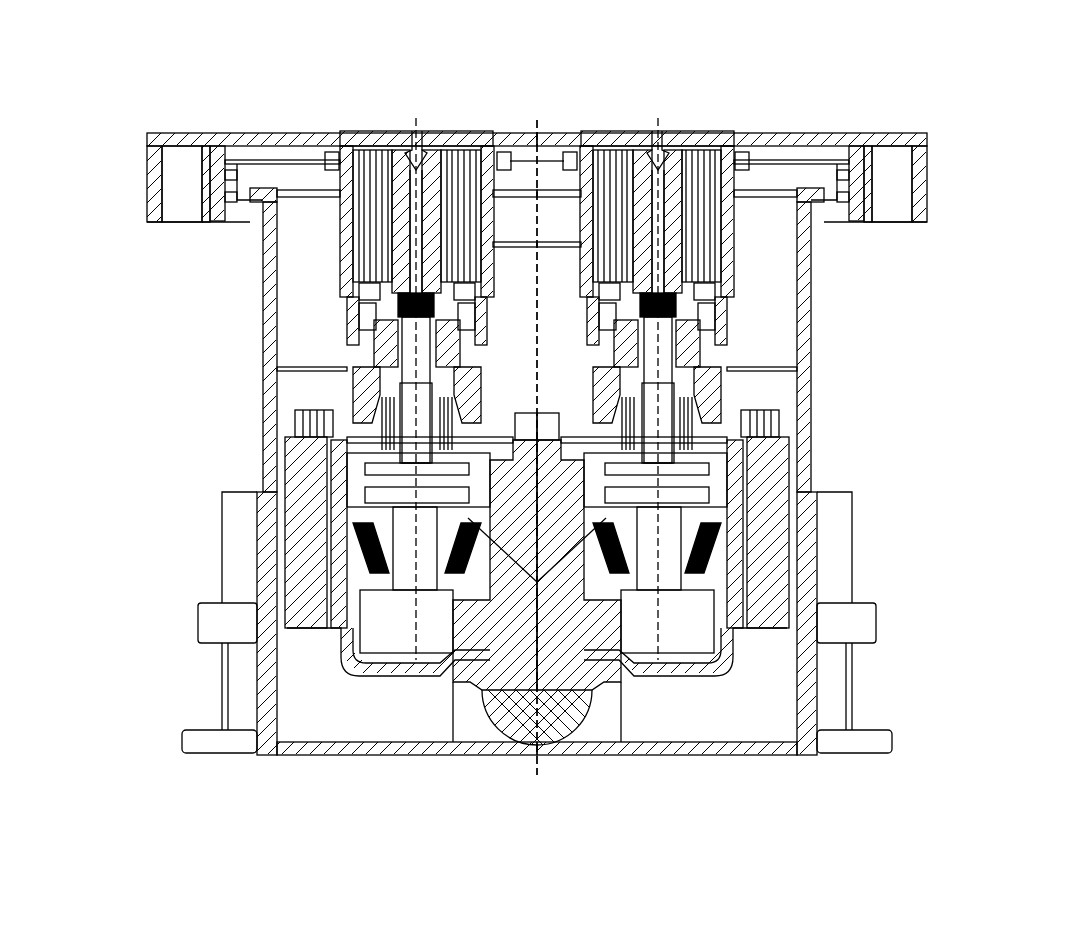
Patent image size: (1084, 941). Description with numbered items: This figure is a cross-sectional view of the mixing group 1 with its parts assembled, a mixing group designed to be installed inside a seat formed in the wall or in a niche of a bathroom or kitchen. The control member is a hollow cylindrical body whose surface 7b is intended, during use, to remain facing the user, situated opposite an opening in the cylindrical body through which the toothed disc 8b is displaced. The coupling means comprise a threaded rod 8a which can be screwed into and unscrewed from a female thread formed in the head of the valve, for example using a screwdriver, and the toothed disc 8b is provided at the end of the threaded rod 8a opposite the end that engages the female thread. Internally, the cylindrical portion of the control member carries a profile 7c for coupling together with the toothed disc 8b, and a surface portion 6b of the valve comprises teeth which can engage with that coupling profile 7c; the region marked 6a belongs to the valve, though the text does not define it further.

The mixing group 1 is at (838, 87).
The surface 7b is at (366, 129).
The toothed disc 8b is at (472, 150).
The coupling profile 7c is at (343, 243).
The threaded rod 8a is at (398, 258).
The guide element 6a is at (347, 311).
The surface portion 6b is at (347, 330).